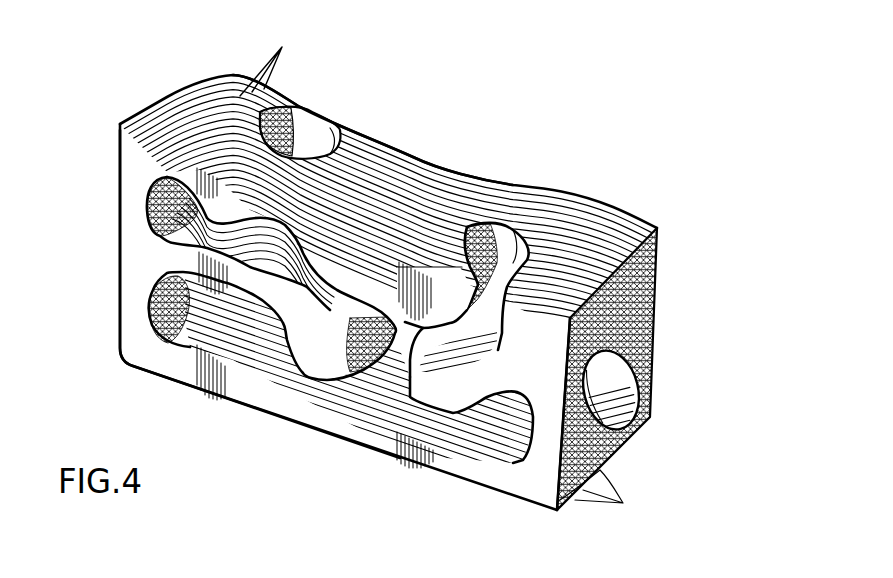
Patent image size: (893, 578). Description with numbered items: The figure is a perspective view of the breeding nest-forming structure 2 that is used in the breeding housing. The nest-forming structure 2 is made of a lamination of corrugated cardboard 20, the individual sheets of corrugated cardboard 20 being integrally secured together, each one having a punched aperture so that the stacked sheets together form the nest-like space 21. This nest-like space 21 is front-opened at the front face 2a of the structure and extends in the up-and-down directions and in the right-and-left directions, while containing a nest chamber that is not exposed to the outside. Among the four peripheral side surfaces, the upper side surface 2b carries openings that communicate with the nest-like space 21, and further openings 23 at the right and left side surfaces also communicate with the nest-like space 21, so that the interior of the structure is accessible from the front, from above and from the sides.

The breeding nest-forming structure 2 is at (603, 193).
The front face 2a is at (130, 305).
The upper side surface 2b is at (420, 172).
The corrugated cardboard 20 is at (452, 264).
The nest-like space 21 is at (380, 407).
The openings 23 is at (613, 380).